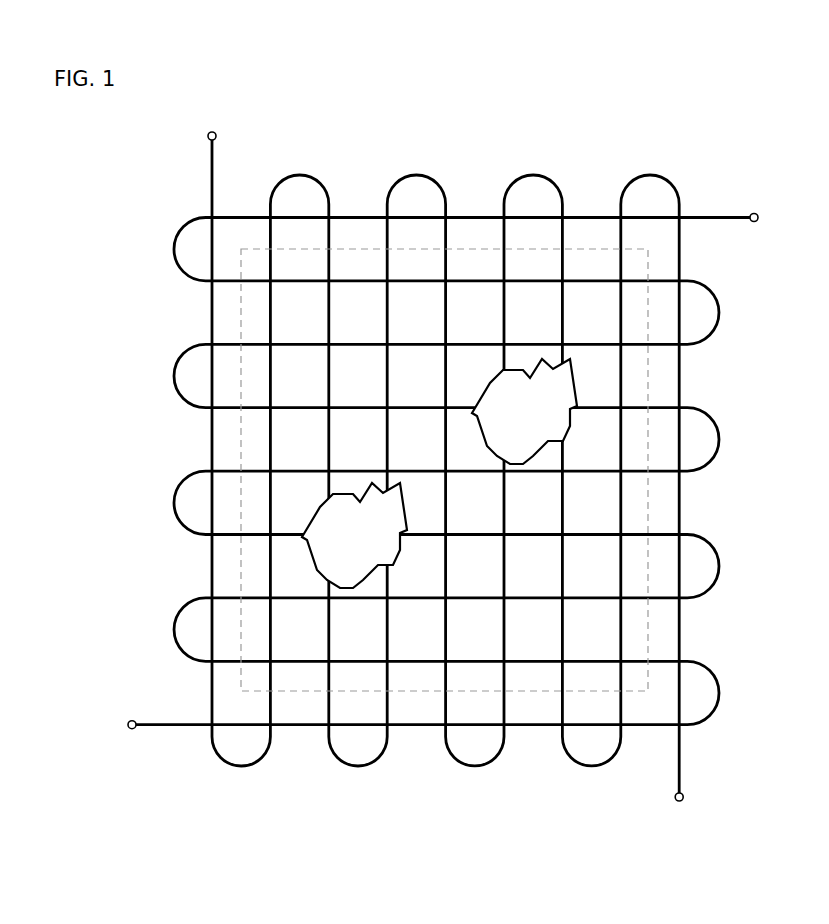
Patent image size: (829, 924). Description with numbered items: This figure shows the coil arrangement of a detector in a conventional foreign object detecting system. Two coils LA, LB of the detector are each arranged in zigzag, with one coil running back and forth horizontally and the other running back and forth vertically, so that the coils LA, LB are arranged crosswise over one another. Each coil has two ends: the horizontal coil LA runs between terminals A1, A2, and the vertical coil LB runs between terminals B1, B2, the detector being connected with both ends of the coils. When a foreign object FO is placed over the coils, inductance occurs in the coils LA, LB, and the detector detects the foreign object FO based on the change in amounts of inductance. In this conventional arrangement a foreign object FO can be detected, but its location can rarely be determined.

The coil of the detector LA is at (361, 208).
The coil of the detector LB is at (200, 307).
The first terminal of line LA A1 is at (152, 712).
The second terminal of line LA A2 is at (738, 207).
The first terminal of line LB B1 is at (194, 149).
The second terminal of line LB B2 is at (698, 779).
The foreign object FO is at (552, 400).